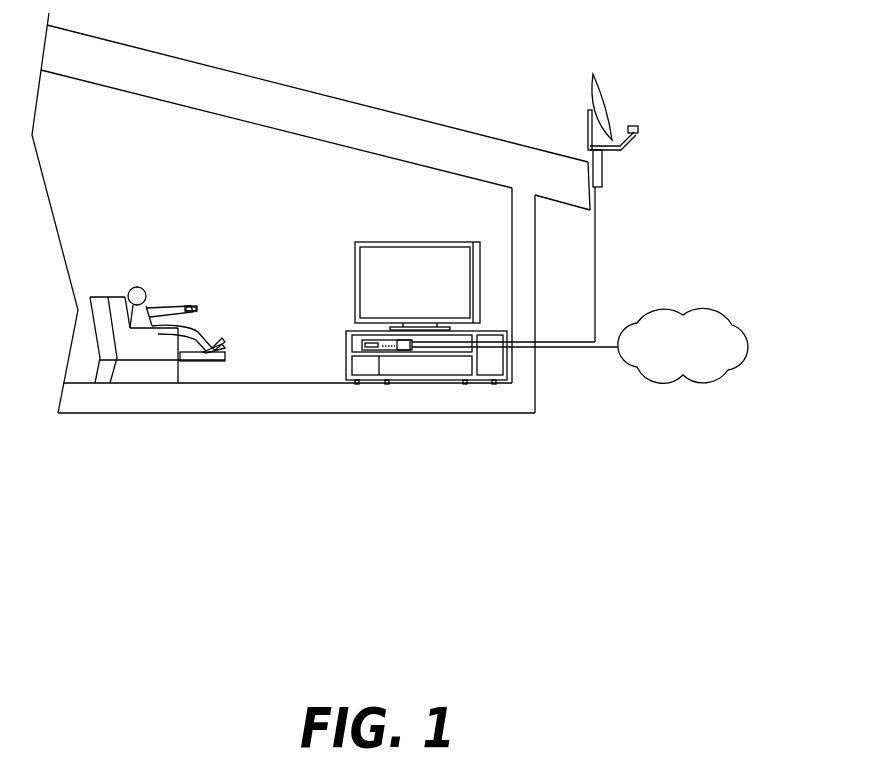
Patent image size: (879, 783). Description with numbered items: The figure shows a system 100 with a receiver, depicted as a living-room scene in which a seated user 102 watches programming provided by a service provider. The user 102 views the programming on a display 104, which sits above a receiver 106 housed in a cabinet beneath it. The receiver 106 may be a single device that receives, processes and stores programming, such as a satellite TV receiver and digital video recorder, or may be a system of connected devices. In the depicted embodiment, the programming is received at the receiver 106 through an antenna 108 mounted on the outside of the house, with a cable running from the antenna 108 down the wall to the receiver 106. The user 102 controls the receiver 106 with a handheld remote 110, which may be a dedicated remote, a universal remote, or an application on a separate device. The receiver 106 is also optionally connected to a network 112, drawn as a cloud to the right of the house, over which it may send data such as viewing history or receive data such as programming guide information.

The system 100 is at (235, 202).
The user 102 is at (122, 262).
The display 104 is at (389, 242).
The receiver 106 is at (362, 346).
The antenna 108 is at (603, 95).
The remote 110 is at (195, 309).
The network 112 is at (712, 310).